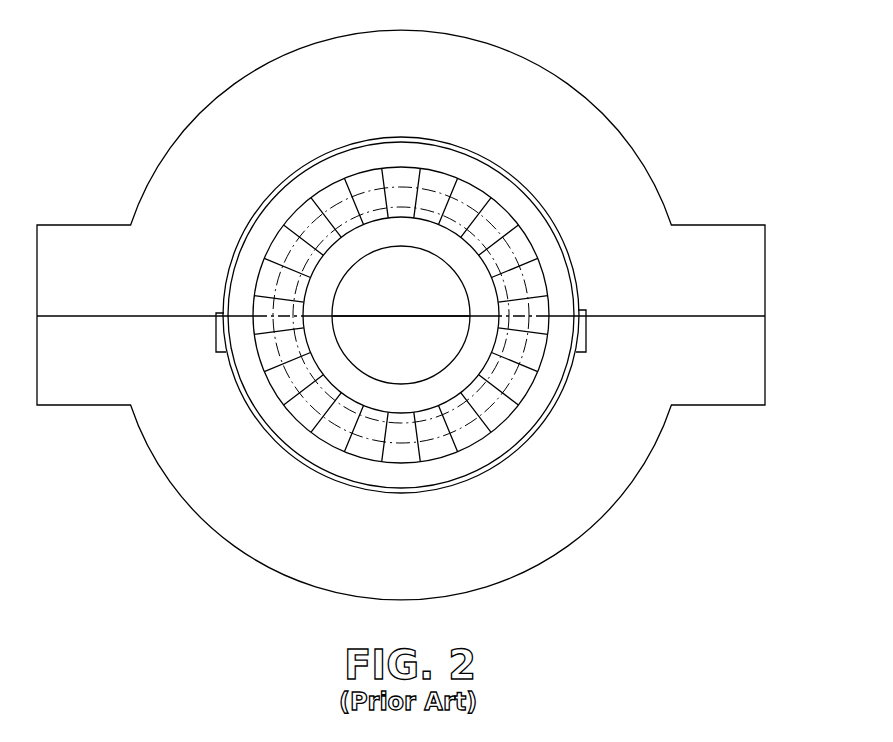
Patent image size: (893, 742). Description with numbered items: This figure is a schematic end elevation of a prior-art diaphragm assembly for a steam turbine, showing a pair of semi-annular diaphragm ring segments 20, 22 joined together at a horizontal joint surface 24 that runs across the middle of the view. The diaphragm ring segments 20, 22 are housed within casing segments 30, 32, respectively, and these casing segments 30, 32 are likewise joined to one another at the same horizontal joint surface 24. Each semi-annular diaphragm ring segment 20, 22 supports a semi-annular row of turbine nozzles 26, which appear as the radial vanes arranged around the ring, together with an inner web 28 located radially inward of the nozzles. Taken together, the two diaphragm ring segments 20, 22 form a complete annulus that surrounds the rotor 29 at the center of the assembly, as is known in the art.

The semi-annular diaphragm ring segment 20 is at (503, 190).
The semi-annular diaphragm ring segment 22 is at (502, 437).
The horizontal joint surface 24 is at (219, 299).
The turbine nozzles 26 is at (405, 187).
The inner web 28 is at (350, 253).
The rotor 29 is at (417, 362).
The casing segment 30 is at (557, 224).
The casing segment 32 is at (569, 389).